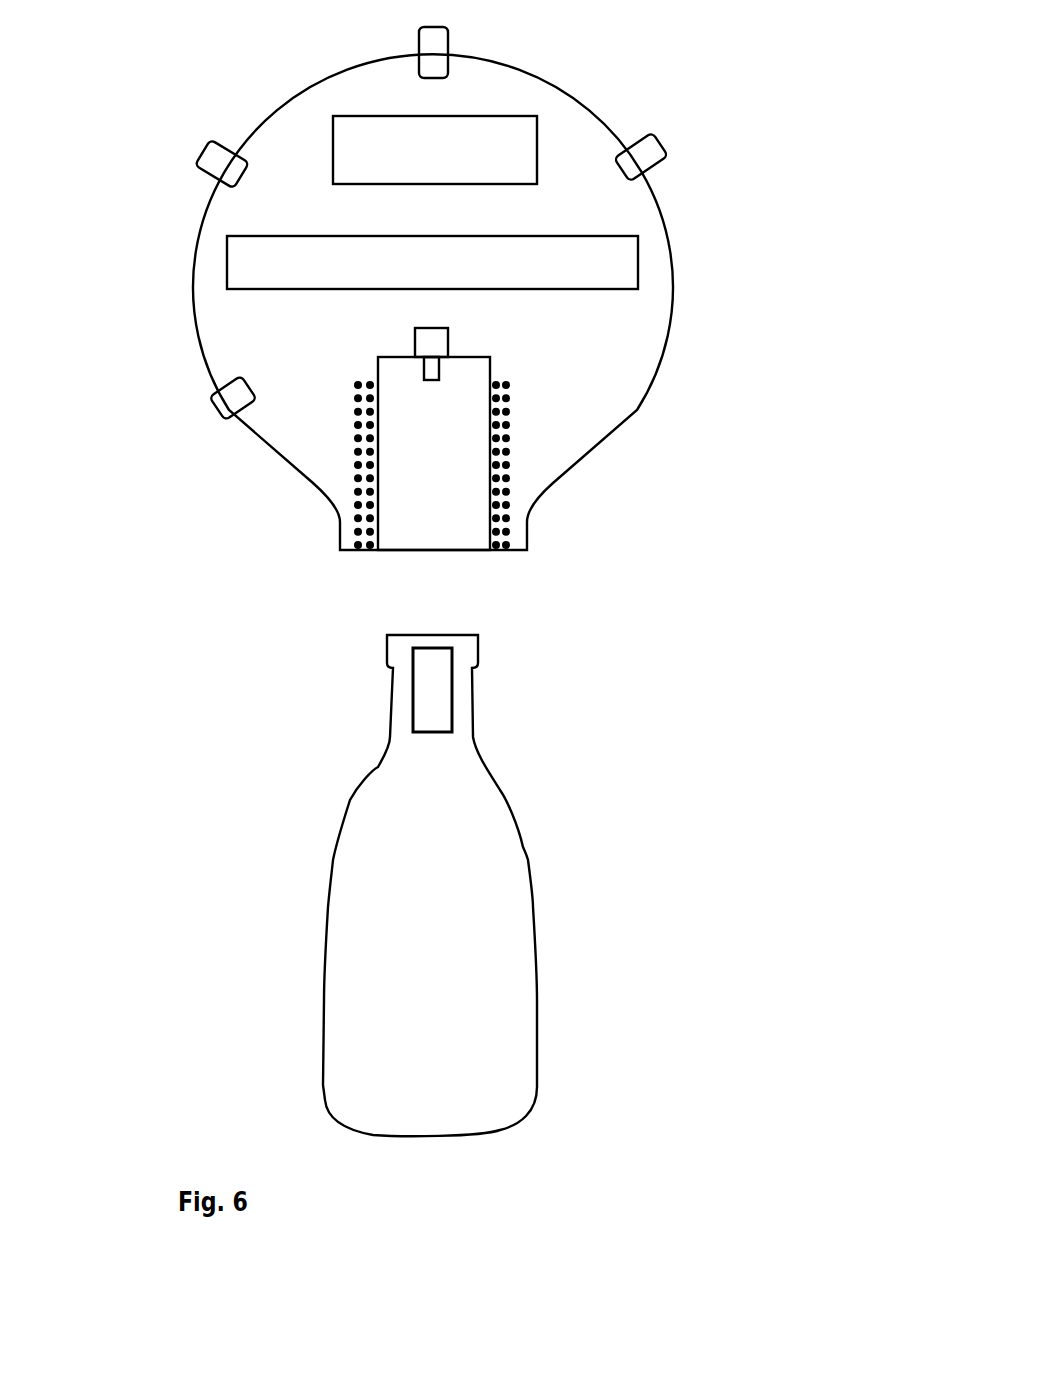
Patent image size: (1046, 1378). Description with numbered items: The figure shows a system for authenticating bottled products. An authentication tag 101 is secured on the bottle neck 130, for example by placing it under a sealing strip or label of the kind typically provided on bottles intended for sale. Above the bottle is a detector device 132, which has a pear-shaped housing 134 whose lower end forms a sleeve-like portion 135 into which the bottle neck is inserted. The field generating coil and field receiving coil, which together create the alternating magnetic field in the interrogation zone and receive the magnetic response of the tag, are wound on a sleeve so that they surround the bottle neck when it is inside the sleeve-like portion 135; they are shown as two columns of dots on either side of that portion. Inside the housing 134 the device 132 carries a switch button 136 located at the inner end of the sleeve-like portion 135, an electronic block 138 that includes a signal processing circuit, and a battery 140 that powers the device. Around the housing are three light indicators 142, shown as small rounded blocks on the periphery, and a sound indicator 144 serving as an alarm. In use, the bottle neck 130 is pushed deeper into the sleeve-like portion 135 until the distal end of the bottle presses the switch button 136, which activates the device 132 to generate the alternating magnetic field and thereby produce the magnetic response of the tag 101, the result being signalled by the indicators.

The detector device 132 is at (683, 98).
The pear-shaped housing 134 is at (195, 290).
The light indicators 142 is at (447, 38).
The sound indicator 144 is at (218, 408).
The battery 140 is at (513, 117).
The electronic block 138 is at (623, 265).
The switch button 136 is at (437, 343).
The sleeve-like portion 135 is at (452, 528).
The bottle neck 130 is at (508, 837).
The authentication tag 101 is at (437, 698).